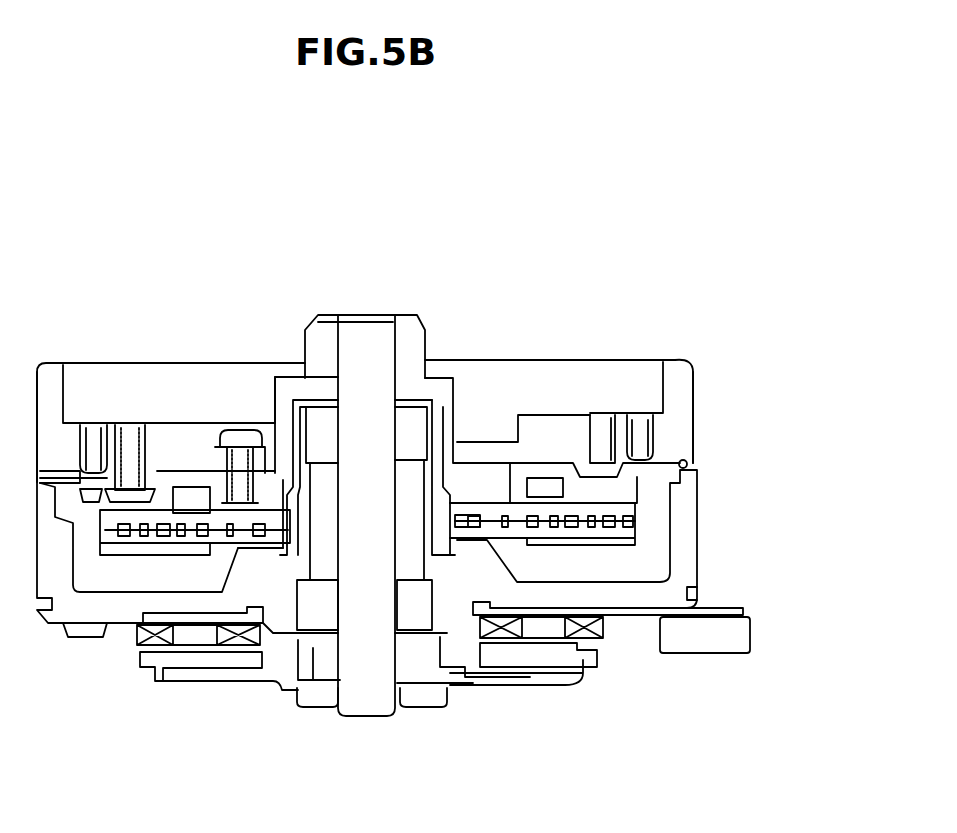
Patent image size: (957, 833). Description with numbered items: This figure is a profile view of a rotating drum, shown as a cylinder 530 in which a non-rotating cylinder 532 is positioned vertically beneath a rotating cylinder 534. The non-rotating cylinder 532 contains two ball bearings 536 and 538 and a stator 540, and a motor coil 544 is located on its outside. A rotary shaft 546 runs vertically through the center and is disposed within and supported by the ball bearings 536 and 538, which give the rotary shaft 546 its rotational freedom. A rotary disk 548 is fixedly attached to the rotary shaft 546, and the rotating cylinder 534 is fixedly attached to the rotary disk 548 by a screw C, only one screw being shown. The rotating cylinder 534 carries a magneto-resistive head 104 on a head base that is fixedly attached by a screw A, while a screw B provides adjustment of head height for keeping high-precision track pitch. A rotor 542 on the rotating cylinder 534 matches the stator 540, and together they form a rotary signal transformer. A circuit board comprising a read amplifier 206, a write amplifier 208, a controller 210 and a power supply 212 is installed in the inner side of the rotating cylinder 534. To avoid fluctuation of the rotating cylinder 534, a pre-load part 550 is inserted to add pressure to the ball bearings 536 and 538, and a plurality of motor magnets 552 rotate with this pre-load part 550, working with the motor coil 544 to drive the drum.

The cylinder 530 is at (683, 352).
The rotating cylinder 534 is at (680, 384).
The rotary disk 548 is at (522, 357).
The rotary shaft 546 is at (363, 318).
The ball bearing 538 is at (412, 420).
The ball bearing 536 is at (317, 625).
The pre-load part 550 is at (420, 682).
The non-rotating cylinder 532 is at (660, 583).
The magneto-resistive head 104 is at (688, 470).
The stator 540 is at (600, 536).
The rotor 542 is at (548, 505).
The read amplifier 206 is at (674, 511).
The write amplifier 208 is at (703, 531).
The controller 210 is at (583, 540).
The power supply 212 is at (741, 557).
The motor coil 544 is at (140, 645).
The motor magnets 552 is at (197, 667).
The screw A is at (598, 413).
The screw B is at (637, 413).
The screw C is at (238, 428).